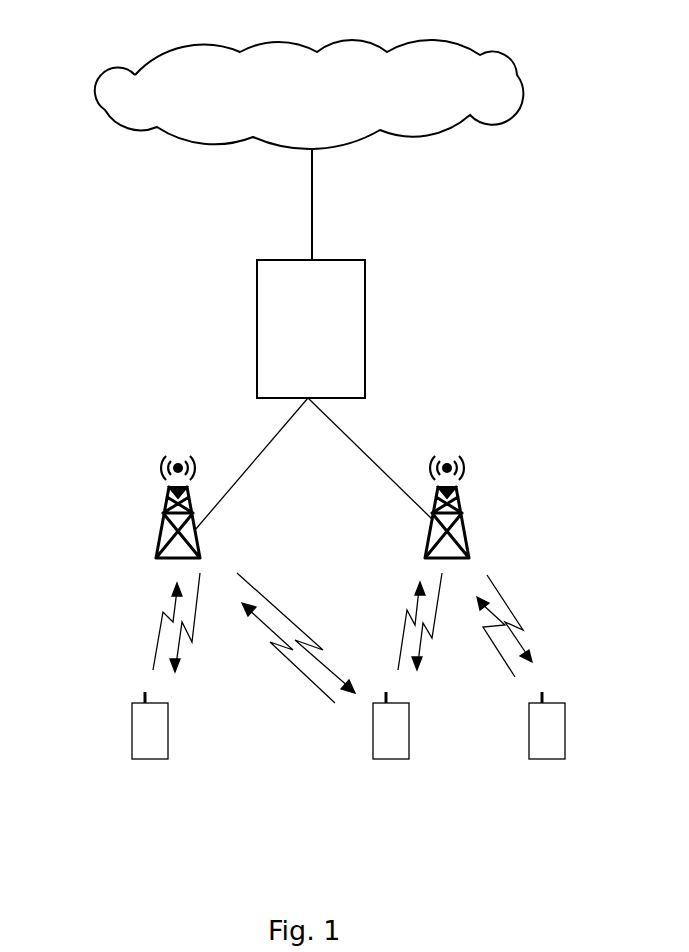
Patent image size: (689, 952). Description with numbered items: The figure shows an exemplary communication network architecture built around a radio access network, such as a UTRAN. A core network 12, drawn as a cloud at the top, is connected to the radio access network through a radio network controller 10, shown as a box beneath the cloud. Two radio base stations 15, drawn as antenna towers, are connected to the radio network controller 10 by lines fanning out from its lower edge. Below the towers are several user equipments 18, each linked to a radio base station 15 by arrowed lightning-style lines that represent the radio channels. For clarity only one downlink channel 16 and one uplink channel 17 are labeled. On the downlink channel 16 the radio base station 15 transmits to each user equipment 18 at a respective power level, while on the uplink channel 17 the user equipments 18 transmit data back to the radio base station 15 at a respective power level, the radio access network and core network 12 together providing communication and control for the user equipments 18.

The core network 12 is at (515, 82).
The radio network controller 10 is at (367, 323).
The radio base station 15 is at (167, 512).
The downlink channel 16 is at (252, 582).
The uplink channel 17 is at (160, 622).
The user equipment 18 is at (132, 727).